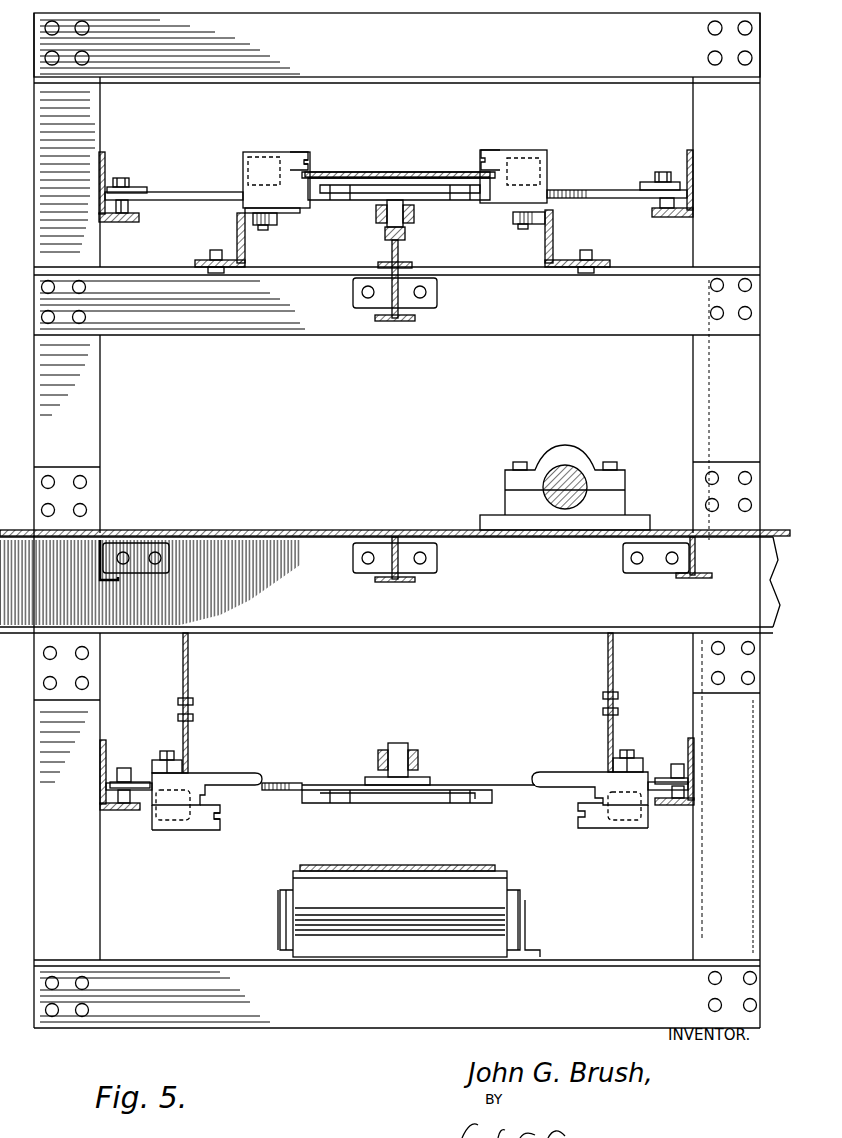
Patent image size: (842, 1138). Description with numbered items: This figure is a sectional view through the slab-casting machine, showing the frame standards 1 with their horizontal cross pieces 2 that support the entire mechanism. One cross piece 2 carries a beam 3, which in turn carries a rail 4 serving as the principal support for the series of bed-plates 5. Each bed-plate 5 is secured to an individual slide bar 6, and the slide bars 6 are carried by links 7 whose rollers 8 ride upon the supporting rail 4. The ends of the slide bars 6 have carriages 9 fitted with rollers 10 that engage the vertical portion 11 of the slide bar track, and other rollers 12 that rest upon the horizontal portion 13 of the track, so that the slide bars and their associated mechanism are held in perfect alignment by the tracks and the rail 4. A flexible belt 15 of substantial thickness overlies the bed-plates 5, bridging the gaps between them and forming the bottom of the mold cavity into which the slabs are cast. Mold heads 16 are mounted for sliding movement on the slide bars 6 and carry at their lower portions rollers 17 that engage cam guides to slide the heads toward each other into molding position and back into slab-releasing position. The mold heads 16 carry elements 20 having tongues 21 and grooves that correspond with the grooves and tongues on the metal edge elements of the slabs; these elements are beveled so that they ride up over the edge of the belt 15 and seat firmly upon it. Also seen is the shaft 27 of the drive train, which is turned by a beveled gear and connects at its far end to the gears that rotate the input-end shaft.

The frame standards 1 is at (100, 388).
The horizontal cross pieces 2 is at (458, 345).
The beam 3 is at (388, 322).
The rail 4 is at (405, 240).
The bed-plates 5 is at (405, 178).
The slide bars 6 is at (203, 200).
The links 7 is at (378, 222).
The rollers 8 is at (403, 215).
The carriages 9 is at (128, 180).
The rollers 10 is at (135, 194).
The vertical portion of the slide bar track 11 is at (105, 160).
The rollers 12 is at (125, 212).
The horizontal portion of the slide bar track 13 is at (108, 223).
The flexible belt 15 is at (370, 178).
The mold heads 16 is at (243, 172).
The rollers 17 is at (272, 226).
The elements 20 is at (296, 152).
The tongues 21 is at (312, 160).
The shaft 27 is at (557, 472).